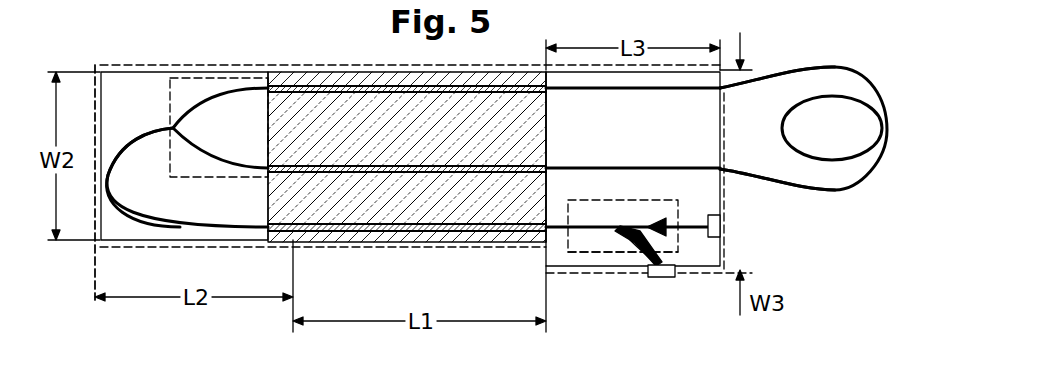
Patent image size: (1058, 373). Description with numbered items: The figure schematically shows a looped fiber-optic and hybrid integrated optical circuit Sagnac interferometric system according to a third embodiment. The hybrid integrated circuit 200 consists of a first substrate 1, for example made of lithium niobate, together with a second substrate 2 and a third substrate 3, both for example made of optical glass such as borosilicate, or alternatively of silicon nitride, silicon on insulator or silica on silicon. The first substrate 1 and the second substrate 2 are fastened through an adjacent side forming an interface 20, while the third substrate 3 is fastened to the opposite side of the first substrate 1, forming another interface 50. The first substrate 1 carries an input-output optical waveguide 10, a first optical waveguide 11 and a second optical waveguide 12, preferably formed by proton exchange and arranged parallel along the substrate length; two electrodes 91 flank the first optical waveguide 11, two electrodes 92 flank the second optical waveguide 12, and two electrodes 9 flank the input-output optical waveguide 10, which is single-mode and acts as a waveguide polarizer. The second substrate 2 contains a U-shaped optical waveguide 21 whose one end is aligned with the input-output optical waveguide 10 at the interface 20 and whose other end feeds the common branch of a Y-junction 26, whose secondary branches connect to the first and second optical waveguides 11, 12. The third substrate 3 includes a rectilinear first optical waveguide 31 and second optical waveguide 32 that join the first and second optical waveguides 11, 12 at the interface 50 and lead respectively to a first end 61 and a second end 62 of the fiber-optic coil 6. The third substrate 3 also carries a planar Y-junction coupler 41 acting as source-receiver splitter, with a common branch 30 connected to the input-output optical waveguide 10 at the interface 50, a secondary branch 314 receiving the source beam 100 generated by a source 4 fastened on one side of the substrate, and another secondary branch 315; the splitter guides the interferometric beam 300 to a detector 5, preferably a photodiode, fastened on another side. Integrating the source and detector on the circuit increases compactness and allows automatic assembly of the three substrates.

The first substrate 1 is at (350, 248).
The second substrate 2 is at (130, 248).
The third substrate 3 is at (588, 272).
The source 4 is at (722, 229).
The detector 5 is at (662, 272).
The fiber-optic coil 6 is at (815, 107).
The electrodes 9 is at (467, 232).
The input-output optical waveguide 10 is at (415, 232).
The first optical waveguide 11 is at (398, 164).
The second optical waveguide 12 is at (320, 84).
The interface 20 is at (268, 193).
The U-shaped optical waveguide 21 is at (147, 130).
The junction 26 is at (170, 96).
The common branch 30 is at (588, 222).
The first optical waveguide 31 is at (610, 166).
The second optical waveguide 32 is at (650, 92).
The Y-junction coupler 41 is at (605, 255).
The interface 50 is at (548, 106).
The first end 61 is at (723, 172).
The second end 62 is at (735, 88).
The electrodes 91 is at (447, 164).
The electrodes 92 is at (378, 90).
The source beam 100 is at (662, 217).
The hybrid integrated circuit 200 is at (95, 240).
The interferometric beam 300 is at (650, 243).
The secondary branch 314 is at (678, 230).
The secondary branch 315 is at (637, 266).